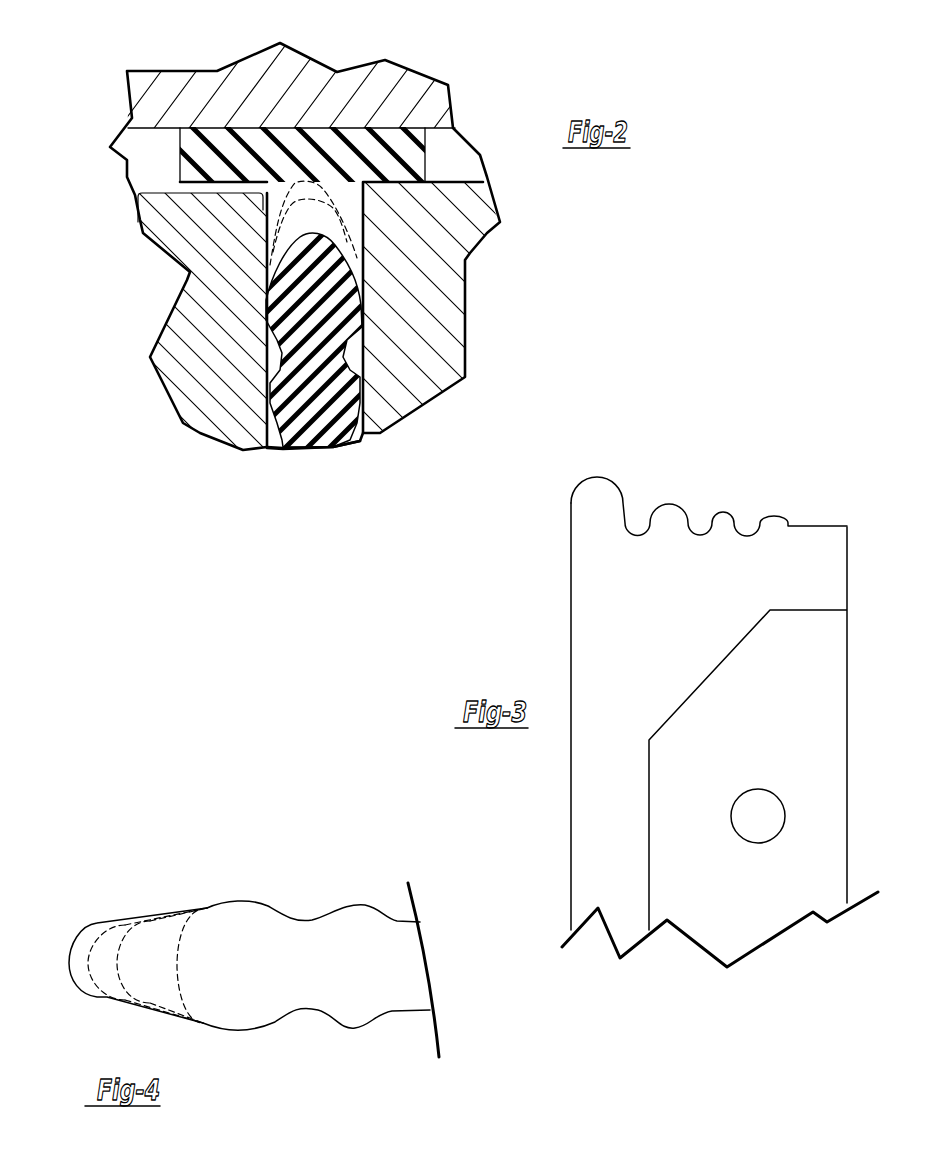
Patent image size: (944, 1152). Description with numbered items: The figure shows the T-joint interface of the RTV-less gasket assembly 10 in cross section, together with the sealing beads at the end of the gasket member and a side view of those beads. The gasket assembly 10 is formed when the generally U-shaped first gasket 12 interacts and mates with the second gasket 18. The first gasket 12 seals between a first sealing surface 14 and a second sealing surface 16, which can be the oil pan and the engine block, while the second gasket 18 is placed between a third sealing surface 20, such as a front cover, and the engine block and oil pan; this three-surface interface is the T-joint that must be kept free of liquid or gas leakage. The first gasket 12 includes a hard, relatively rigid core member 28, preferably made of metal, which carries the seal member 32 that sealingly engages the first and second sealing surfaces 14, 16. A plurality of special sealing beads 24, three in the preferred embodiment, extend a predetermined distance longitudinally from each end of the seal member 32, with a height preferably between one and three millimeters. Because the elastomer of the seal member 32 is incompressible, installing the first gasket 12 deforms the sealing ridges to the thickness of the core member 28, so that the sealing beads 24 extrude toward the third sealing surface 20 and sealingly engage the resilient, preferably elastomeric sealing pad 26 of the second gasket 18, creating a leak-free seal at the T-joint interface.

In FIG. 2, the gasket assembly 10 is at (103, 145).
In FIG. 2, the first gasket 12 is at (279, 458).
In FIG. 2, the first sealing surface 14 is at (207, 330).
In FIG. 2, the second sealing surface 16 is at (432, 320).
In FIG. 2, the second gasket 18 is at (400, 143).
In FIG. 2, the third sealing surface 20 is at (172, 132).
In FIG. 2, the sealing beads 24 is at (266, 295).
In FIG. 3, the sealing beads 24 is at (725, 522).
In FIG. 4, the sealing beads 24 is at (77, 943).
In FIG. 2, the sealing pad 26 is at (266, 196).
In FIG. 3, the core member 28 is at (793, 740).
In FIG. 2, the seal member 32 is at (303, 400).
In FIG. 3, the seal member 32 is at (587, 802).
In FIG. 4, the seal member 32 is at (350, 950).